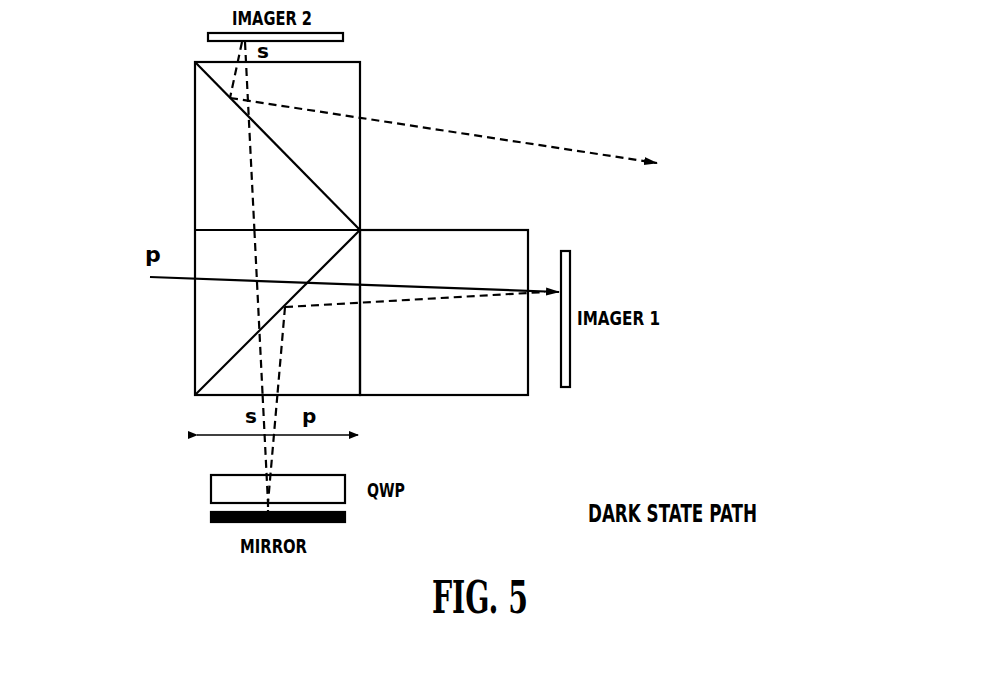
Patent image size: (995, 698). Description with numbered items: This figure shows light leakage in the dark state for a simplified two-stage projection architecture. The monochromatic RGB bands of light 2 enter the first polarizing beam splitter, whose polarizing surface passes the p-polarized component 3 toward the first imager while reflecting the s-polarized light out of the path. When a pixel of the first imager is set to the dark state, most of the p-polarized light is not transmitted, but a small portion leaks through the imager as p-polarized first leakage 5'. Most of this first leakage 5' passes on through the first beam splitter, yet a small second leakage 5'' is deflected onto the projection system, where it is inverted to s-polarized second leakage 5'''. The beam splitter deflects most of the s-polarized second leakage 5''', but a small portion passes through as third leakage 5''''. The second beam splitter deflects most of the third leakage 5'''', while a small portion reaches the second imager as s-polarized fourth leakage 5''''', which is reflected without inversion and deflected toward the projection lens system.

The RGB bands of light 2 is at (213, 279).
The p-polarized component 3 is at (428, 285).
The p-polarized first leakage 5' is at (415, 373).
The second leakage 5'' is at (362, 453).
The s-polarized second leakage 5''' is at (194, 312).
The third leakage 5'''' is at (184, 136).
The s-polarized fourth leakage 5''''' is at (443, 96).